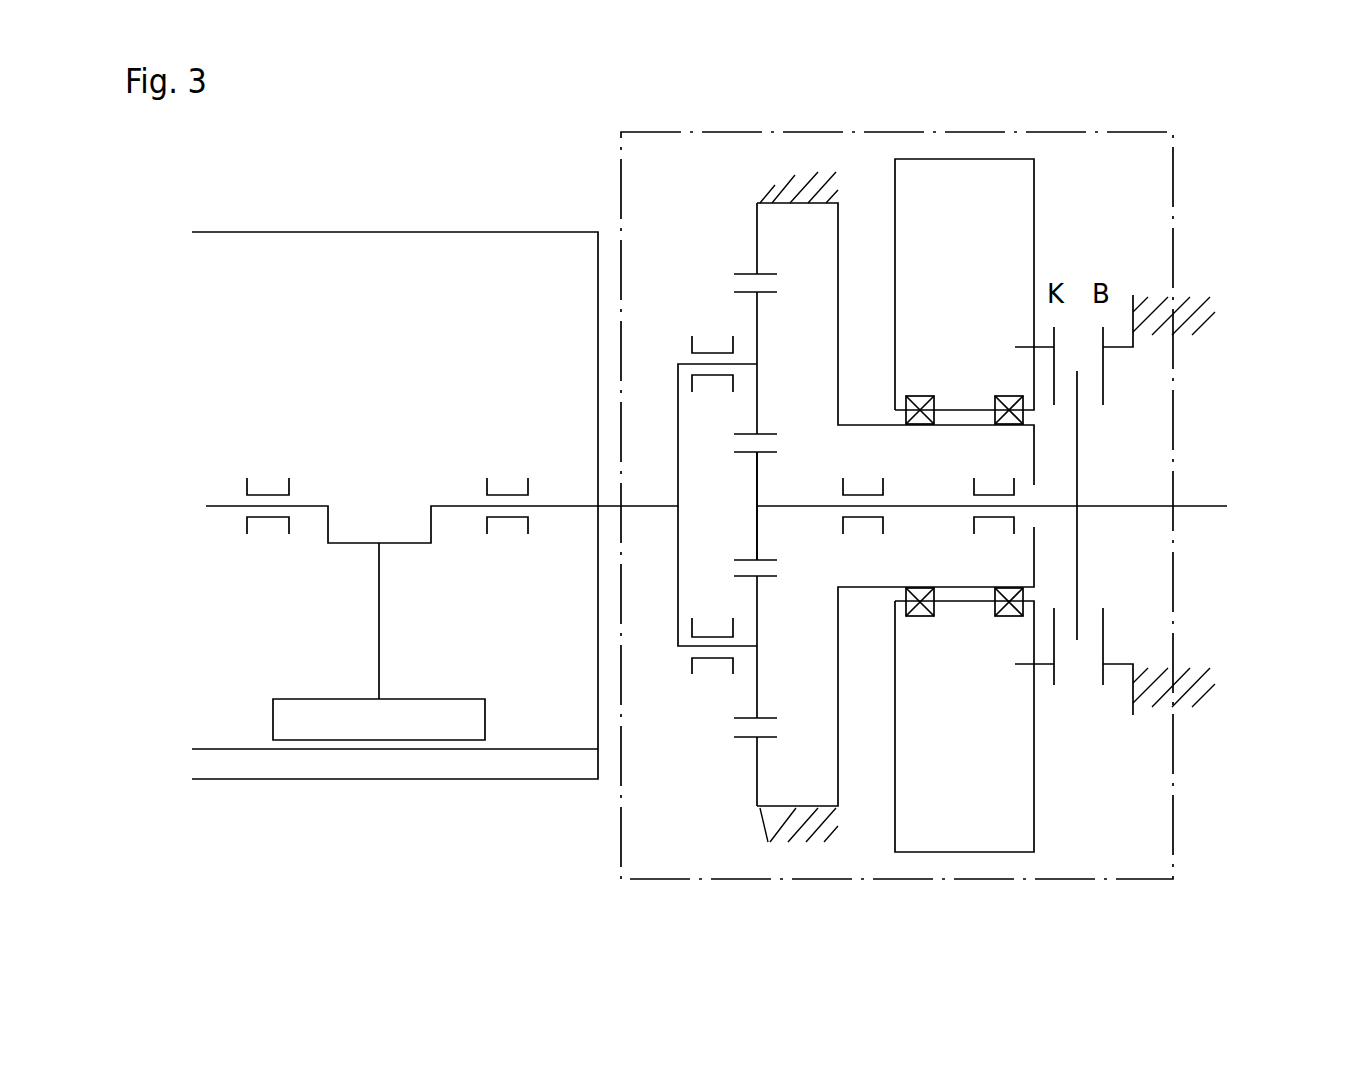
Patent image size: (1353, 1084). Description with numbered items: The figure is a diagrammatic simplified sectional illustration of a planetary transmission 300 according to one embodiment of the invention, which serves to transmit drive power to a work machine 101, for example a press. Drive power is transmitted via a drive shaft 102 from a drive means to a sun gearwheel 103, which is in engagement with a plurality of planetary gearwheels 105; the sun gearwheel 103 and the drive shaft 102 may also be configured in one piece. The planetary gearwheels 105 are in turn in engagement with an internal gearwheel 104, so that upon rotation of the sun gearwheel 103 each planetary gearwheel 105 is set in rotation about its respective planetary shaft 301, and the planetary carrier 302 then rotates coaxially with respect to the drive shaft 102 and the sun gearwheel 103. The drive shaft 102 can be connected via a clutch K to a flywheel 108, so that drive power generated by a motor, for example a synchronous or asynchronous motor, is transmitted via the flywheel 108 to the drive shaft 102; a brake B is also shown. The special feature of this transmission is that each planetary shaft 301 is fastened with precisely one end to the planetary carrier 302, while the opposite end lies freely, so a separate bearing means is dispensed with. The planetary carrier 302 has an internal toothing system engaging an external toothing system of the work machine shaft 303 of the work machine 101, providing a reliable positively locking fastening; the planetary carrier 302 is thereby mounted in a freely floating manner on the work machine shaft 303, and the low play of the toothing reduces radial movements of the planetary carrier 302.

The work machine 101 is at (252, 198).
The drive shaft 102 is at (1213, 507).
The sun gearwheel 103 is at (769, 536).
The internal gearwheel 104 is at (755, 233).
The planetary gearwheel 105 is at (757, 335).
The flywheel 108 is at (950, 182).
The planetary transmission 300 is at (1102, 111).
The planetary shaft 301 is at (690, 360).
The planetary carrier 302 is at (676, 597).
The work machine shaft 303 is at (573, 504).